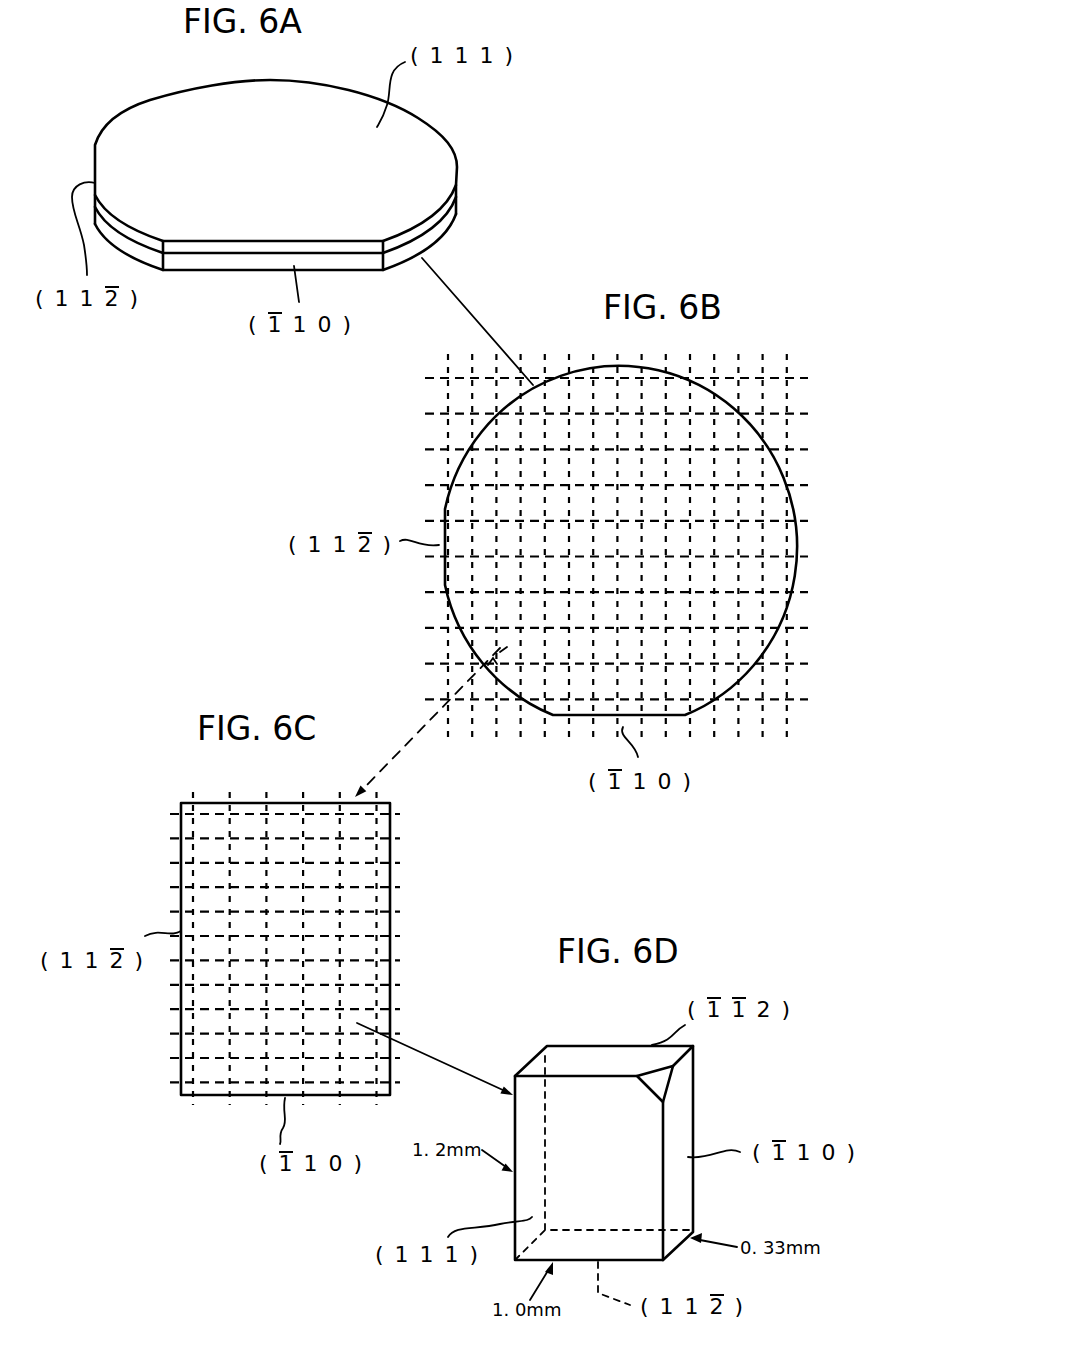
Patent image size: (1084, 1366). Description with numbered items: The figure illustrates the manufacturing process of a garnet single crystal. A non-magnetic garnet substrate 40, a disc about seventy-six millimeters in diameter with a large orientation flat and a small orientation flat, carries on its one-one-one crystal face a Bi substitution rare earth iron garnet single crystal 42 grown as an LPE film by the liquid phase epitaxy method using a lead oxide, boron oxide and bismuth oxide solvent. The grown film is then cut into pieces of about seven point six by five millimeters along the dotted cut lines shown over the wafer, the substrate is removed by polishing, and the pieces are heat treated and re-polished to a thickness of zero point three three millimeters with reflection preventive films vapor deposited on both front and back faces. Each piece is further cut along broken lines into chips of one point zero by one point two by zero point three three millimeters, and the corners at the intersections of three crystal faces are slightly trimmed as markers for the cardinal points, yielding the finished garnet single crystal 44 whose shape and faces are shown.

In FIG. 6A, the non-magnetic garnet substrate 40 is at (428, 243).
In FIG. 6A, the Bi substitution rare earth iron garnet single crystal 42 is at (452, 213).
In FIG. 6D, the garnet single crystal 44 is at (552, 1070).